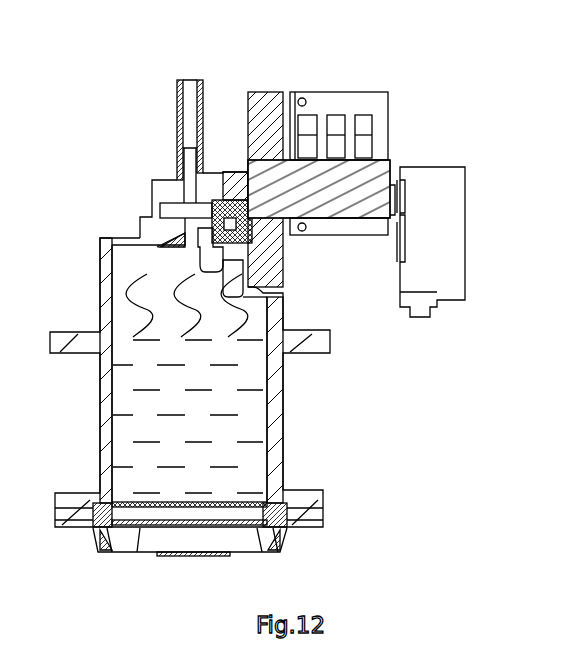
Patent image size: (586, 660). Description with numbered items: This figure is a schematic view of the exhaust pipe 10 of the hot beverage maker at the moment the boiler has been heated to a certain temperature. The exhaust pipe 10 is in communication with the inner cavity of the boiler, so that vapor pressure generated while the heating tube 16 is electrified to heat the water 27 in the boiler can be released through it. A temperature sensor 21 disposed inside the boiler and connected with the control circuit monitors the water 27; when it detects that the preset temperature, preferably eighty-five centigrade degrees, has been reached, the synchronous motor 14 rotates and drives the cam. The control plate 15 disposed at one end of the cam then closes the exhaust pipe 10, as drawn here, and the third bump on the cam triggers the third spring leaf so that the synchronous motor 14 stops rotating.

The exhaust pipe 10 is at (188, 207).
The synchronous motor 14 is at (428, 222).
The control plate 15 is at (258, 127).
The heating tube 16 is at (273, 538).
The temperature sensor 21 is at (188, 453).
The water 27 is at (140, 430).